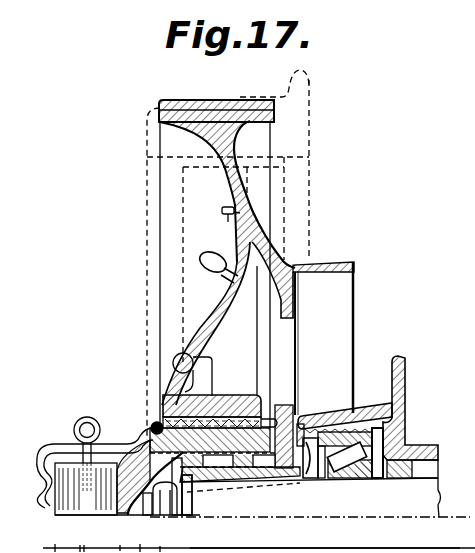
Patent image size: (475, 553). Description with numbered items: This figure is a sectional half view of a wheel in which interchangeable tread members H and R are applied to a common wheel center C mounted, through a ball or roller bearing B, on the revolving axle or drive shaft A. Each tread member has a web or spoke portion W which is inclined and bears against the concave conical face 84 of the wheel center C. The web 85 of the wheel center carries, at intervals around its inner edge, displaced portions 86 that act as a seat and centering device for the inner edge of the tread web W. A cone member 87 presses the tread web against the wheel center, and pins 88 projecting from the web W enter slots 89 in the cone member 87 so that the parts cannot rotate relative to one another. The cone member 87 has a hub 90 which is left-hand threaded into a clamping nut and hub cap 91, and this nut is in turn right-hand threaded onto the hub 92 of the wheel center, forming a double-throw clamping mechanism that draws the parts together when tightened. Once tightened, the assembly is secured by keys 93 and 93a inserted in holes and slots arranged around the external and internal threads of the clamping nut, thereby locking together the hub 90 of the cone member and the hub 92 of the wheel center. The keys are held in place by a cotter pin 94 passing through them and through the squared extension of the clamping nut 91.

The tread member H is at (223, 104).
The tread member R is at (150, 138).
The web or spoke portion W is at (232, 176).
The cone member 87 is at (210, 308).
The concave conical face 84 is at (262, 222).
The slots 89 is at (233, 204).
The pins 88 is at (250, 232).
The displaced portions 86 is at (264, 285).
The wheel center C is at (296, 287).
The web of the wheel center 85 is at (297, 313).
The hub of the cone member 90 is at (222, 410).
The clamping nut and hub cap 91 is at (156, 423).
The hub of the wheel center 92 is at (237, 467).
The revolving axle or drive shaft A is at (423, 447).
The ball or roller bearing B is at (367, 410).
The key 93 is at (55, 444).
The cotter pin 94 is at (107, 413).
The key 93a is at (110, 525).